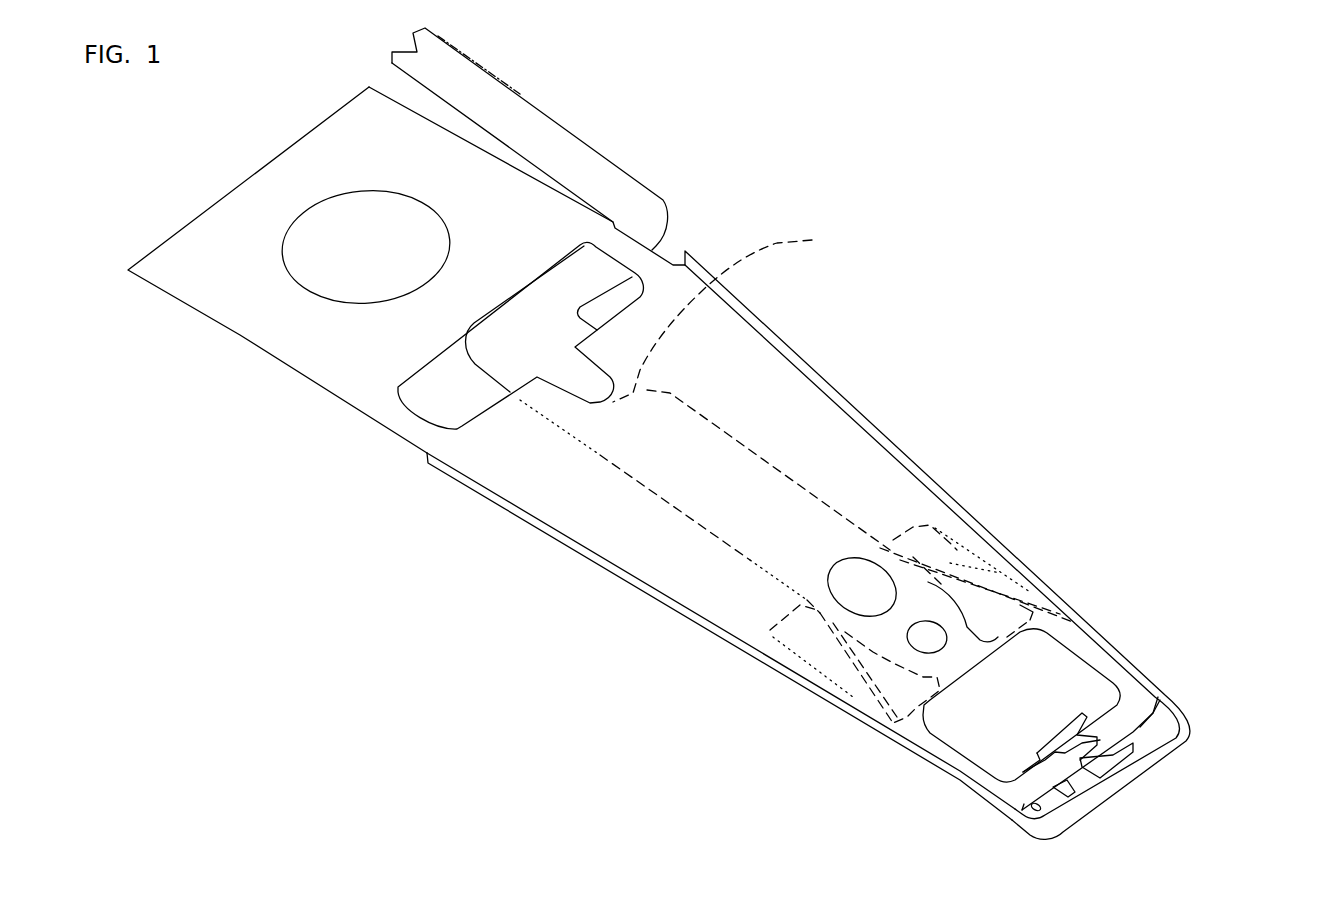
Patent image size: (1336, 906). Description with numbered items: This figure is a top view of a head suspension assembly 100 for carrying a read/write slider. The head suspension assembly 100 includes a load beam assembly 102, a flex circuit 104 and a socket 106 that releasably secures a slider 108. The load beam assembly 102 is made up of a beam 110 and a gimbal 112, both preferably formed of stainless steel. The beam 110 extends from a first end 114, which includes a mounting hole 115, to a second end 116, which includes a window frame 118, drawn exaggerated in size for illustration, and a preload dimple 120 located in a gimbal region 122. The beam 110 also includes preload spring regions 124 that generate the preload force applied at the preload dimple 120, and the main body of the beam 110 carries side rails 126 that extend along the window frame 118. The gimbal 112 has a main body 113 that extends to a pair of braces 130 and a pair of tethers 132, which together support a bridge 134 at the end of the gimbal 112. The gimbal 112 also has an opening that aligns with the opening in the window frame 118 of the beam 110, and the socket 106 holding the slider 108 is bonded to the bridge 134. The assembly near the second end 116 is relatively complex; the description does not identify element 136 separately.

The head suspension assembly 100 is at (978, 193).
The load beam assembly 102 is at (867, 413).
The flex circuit 104 is at (525, 128).
The socket 106 is at (1080, 795).
The slider 108 is at (1093, 767).
The beam 110 is at (612, 533).
The gimbal 112 is at (836, 426).
The main body 113 is at (807, 523).
The first end 114 is at (257, 125).
The mounting hole 115 is at (288, 265).
The second end 116 is at (1230, 706).
The window frame 118 is at (977, 667).
The preload dimple 120 is at (1092, 747).
The gimbal region 122 is at (1103, 440).
The preload spring regions 124 is at (628, 248).
The side rails 126 is at (470, 485).
The braces 130 is at (820, 637).
The tethers 132 is at (917, 705).
The bridge 134 is at (1138, 728).
The projection 136 is at (942, 563).